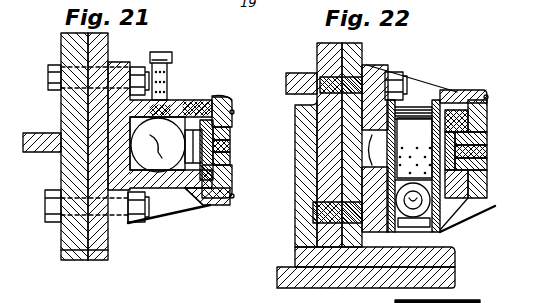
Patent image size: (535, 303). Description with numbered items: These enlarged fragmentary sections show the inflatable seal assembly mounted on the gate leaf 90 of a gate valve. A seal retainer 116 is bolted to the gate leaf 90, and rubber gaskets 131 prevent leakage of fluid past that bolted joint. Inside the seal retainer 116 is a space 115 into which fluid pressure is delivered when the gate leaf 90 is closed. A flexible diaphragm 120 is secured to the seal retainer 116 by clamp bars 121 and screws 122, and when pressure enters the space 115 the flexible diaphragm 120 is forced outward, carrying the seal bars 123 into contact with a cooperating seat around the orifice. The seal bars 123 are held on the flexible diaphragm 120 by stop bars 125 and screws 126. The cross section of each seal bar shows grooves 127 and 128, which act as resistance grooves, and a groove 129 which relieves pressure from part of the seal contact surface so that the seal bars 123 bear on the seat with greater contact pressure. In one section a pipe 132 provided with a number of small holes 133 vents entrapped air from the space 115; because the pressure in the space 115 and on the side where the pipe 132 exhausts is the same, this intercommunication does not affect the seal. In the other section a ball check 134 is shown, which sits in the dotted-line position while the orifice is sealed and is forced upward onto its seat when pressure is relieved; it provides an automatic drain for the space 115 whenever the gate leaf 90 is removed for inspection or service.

In FIG. 21, the gate leaf 90 is at (58, 248).
In FIG. 22, the gate leaf 90 is at (280, 268).
In FIG. 21, the space 115 is at (192, 100).
In FIG. 22, the space 115 is at (400, 100).
In FIG. 21, the seal retainer 116 is at (226, 97).
In FIG. 22, the seal retainer 116 is at (467, 90).
In FIG. 21, the flexible diaphragm 120 is at (212, 210).
In FIG. 22, the flexible diaphragm 120 is at (432, 148).
In FIG. 21, the clamp bars 121 is at (232, 101).
In FIG. 22, the clamp bars 121 is at (487, 105).
In FIG. 21, the screws 122 is at (233, 112).
In FIG. 22, the screws 122 is at (486, 95).
In FIG. 21, the seal bars 123 is at (230, 128).
In FIG. 22, the seal bars 123 is at (487, 125).
In FIG. 21, the stop bars 125 is at (200, 208).
In FIG. 22, the stop bars 125 is at (456, 92).
In FIG. 21, the screws 126 is at (172, 188).
In FIG. 21, the groove 127 is at (231, 133).
In FIG. 22, the groove 127 is at (487, 165).
In FIG. 21, the groove 128 is at (231, 147).
In FIG. 22, the groove 128 is at (487, 152).
In FIG. 21, the groove 129 is at (231, 160).
In FIG. 22, the groove 129 is at (487, 140).
In FIG. 21, the rubber gaskets 131 is at (57, 133).
In FIG. 22, the rubber gaskets 131 is at (317, 75).
In FIG. 21, the pipe 132 is at (165, 52).
In FIG. 21, the small holes 133 is at (187, 100).
In FIG. 22, the ball check 134 is at (440, 225).